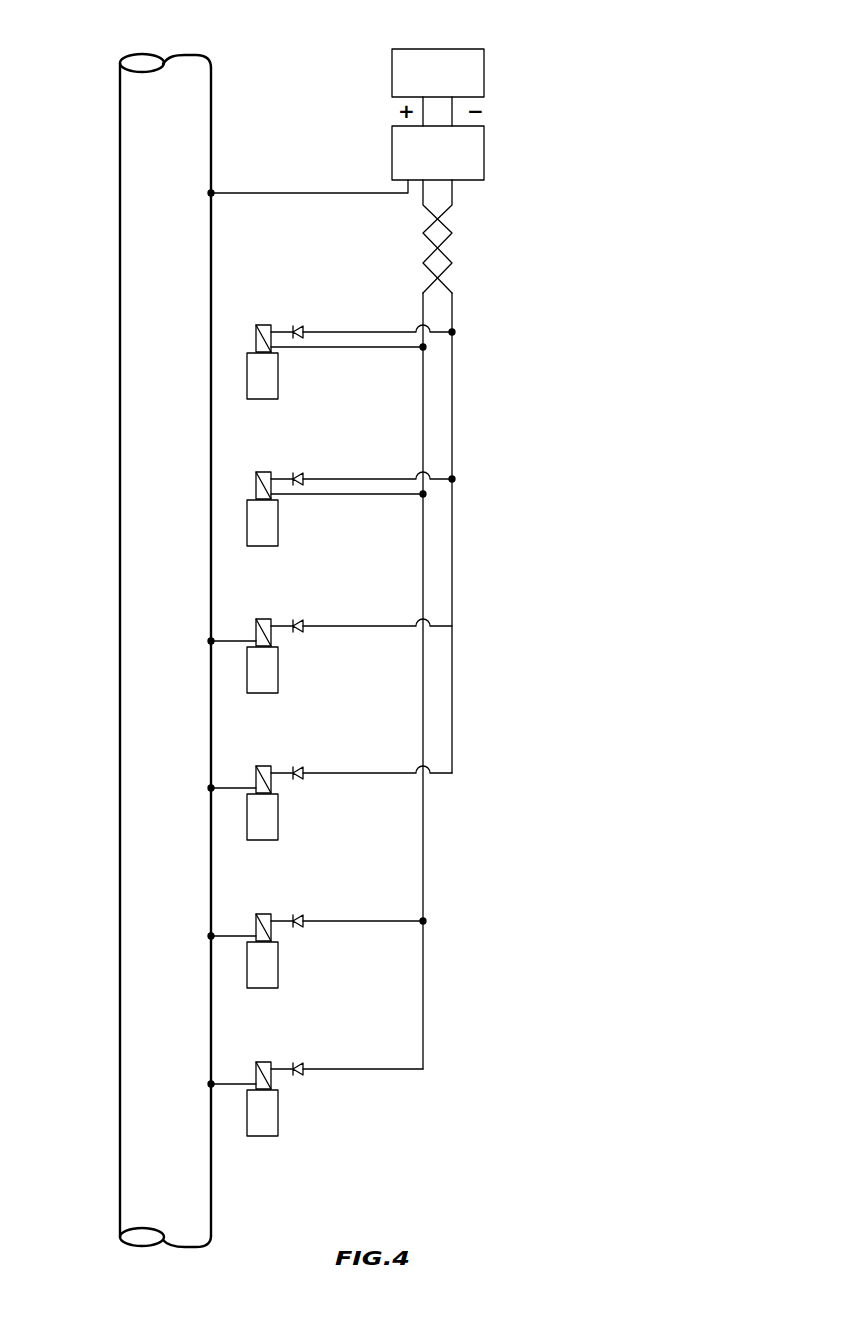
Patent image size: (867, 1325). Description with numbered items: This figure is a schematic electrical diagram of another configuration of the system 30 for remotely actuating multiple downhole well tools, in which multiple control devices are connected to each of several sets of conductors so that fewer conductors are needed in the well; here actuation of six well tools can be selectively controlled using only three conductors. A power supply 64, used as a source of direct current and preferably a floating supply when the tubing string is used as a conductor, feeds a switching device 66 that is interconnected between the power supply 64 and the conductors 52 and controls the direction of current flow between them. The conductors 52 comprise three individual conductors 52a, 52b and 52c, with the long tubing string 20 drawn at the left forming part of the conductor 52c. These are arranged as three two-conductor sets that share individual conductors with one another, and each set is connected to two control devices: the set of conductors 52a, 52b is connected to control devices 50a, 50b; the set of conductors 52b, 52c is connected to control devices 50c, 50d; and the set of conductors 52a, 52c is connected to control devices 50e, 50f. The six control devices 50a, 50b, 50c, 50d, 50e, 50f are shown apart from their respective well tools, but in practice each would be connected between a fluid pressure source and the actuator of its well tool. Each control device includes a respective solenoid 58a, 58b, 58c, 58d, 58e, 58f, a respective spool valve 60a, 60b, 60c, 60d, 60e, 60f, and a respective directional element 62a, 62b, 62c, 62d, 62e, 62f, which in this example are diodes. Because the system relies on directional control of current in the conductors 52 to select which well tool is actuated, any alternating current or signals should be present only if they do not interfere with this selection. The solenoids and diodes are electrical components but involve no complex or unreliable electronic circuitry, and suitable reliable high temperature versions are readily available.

The tubing string 20 is at (118, 420).
The system 30 is at (640, 57).
The conductors 52 is at (462, 231).
The conductor 52a is at (422, 320).
The conductor 52b is at (455, 310).
The conductor 52c is at (283, 193).
The power supply 64 is at (484, 75).
The switching device 66 is at (484, 150).
The control device 50a is at (302, 368).
The control device 50b is at (302, 515).
The control device 50c is at (302, 662).
The control device 50d is at (302, 809).
The control device 50e is at (302, 957).
The control device 50f is at (302, 1105).
The solenoid 58a is at (256, 342).
The solenoid 58b is at (256, 489).
The solenoid 58c is at (256, 636).
The solenoid 58d is at (256, 783).
The solenoid 58e is at (256, 931).
The solenoid 58f is at (256, 1079).
The spool valve 60a is at (268, 399).
The spool valve 60b is at (268, 546).
The spool valve 60c is at (268, 693).
The spool valve 60d is at (268, 840).
The spool valve 60e is at (268, 988).
The spool valve 60f is at (268, 1136).
The directional element 62a is at (302, 329).
The directional element 62b is at (302, 476).
The directional element 62c is at (302, 623).
The directional element 62d is at (302, 770).
The directional element 62e is at (302, 918).
The directional element 62f is at (302, 1066).